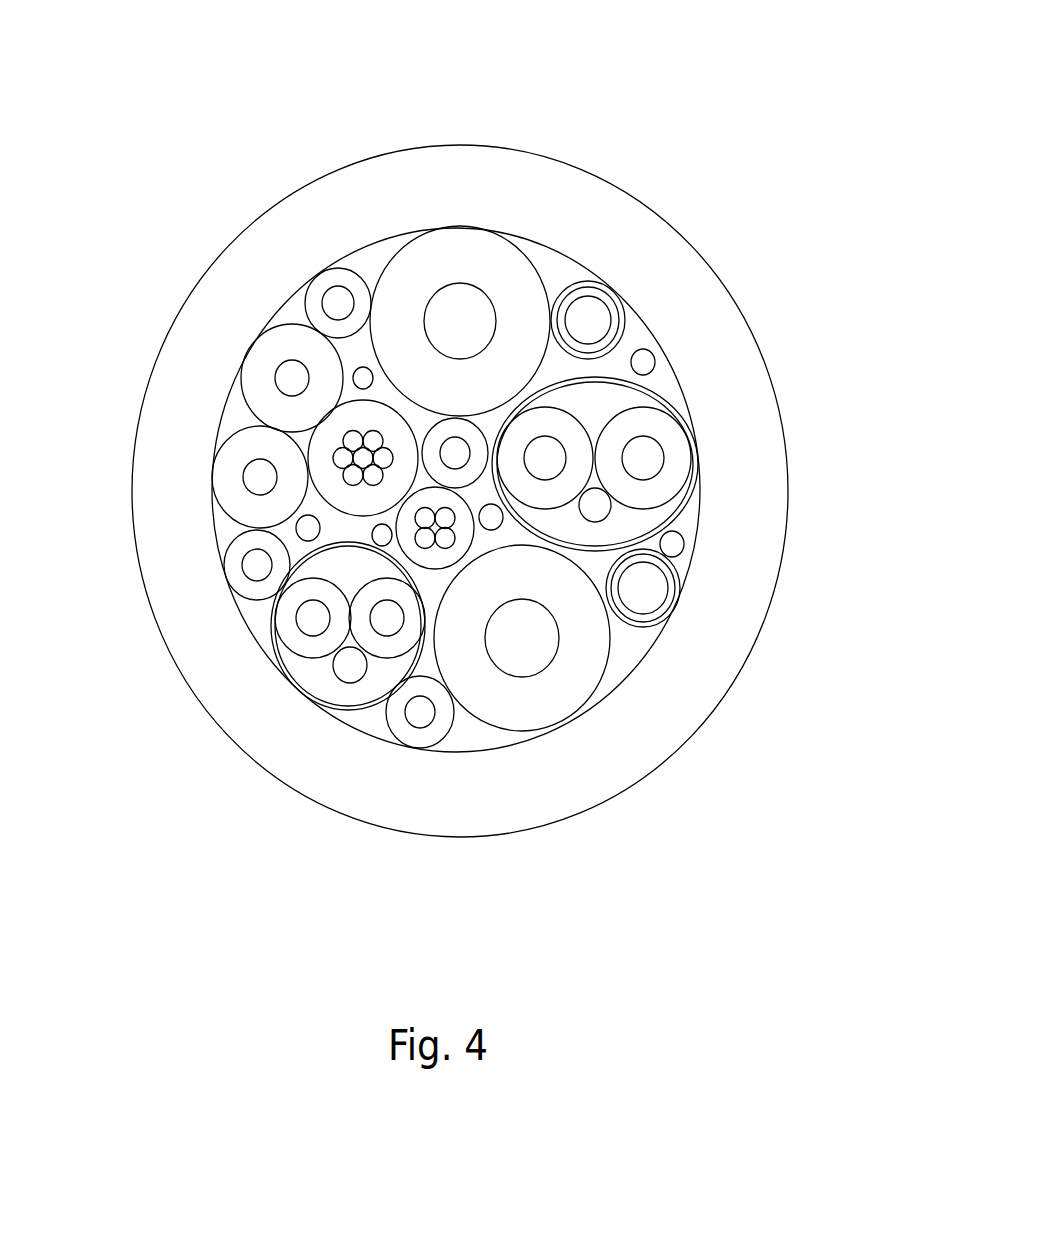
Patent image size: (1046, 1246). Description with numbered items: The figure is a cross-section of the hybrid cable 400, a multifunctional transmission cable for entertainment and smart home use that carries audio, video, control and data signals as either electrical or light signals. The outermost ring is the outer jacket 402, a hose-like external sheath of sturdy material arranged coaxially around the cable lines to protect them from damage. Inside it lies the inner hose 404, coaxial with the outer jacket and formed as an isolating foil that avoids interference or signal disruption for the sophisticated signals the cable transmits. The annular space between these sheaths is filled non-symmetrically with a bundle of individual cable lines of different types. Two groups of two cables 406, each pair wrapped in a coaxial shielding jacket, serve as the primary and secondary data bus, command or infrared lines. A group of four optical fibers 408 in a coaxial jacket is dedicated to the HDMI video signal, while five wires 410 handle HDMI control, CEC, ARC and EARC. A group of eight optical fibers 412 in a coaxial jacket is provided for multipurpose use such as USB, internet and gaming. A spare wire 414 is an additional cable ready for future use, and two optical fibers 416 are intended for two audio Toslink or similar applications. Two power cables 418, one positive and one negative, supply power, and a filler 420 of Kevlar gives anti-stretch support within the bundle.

The hybrid cable 400 is at (722, 73).
The outer jacket 402 is at (690, 258).
The inner hose 404 is at (557, 250).
The group of two cables 406 is at (667, 455).
The group of four optical fibers 408 is at (453, 533).
The wires 410 is at (450, 450).
The group of eight optical fibers 412 is at (347, 498).
The spare wire 414 is at (421, 730).
The optical fibers 416 is at (307, 281).
The power cables 418 is at (453, 253).
The filler 420 is at (685, 550).